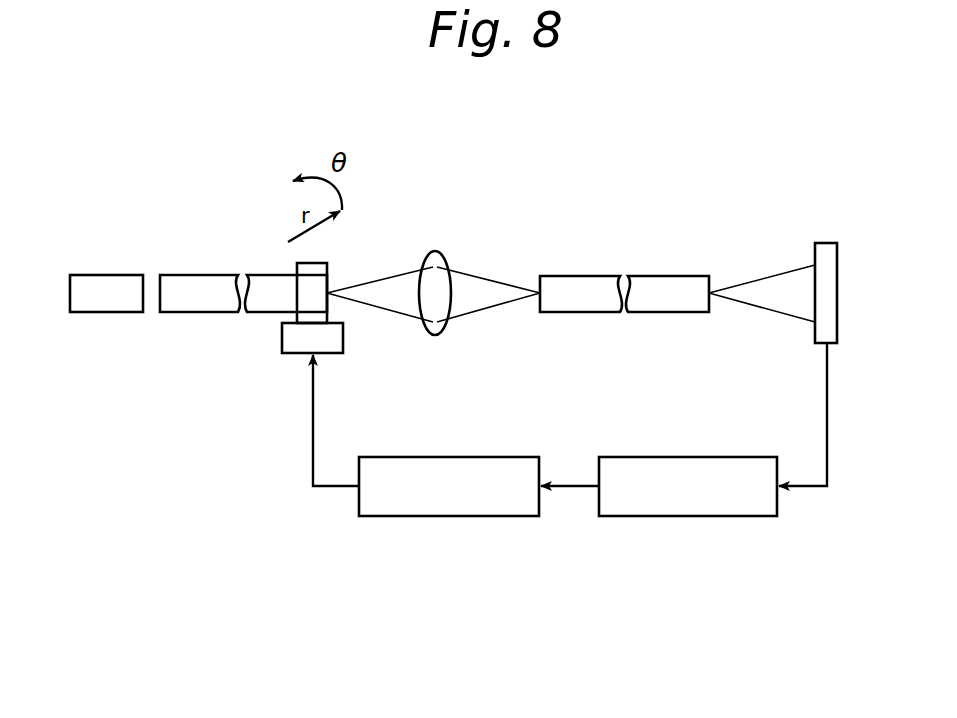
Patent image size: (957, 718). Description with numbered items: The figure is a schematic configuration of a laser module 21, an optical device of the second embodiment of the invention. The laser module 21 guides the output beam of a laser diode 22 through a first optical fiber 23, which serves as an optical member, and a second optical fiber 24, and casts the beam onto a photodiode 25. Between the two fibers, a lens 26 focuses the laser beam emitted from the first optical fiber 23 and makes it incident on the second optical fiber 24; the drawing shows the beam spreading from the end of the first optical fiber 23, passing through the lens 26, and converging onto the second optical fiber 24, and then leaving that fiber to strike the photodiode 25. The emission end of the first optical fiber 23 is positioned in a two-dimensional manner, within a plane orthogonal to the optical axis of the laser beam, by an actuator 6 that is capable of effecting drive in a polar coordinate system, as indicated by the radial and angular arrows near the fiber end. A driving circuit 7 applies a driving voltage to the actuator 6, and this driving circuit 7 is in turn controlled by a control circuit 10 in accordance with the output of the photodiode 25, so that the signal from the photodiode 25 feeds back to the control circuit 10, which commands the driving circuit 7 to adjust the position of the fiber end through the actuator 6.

The laser module 21 is at (162, 168).
The laser diode 22 is at (105, 275).
The first optical fiber 23 is at (215, 275).
The actuator 6 is at (282, 340).
The lens 26 is at (433, 251).
The second optical fiber 24 is at (595, 276).
The photodiode 25 is at (826, 243).
The driving circuit 7 is at (448, 457).
The control circuit 10 is at (686, 457).